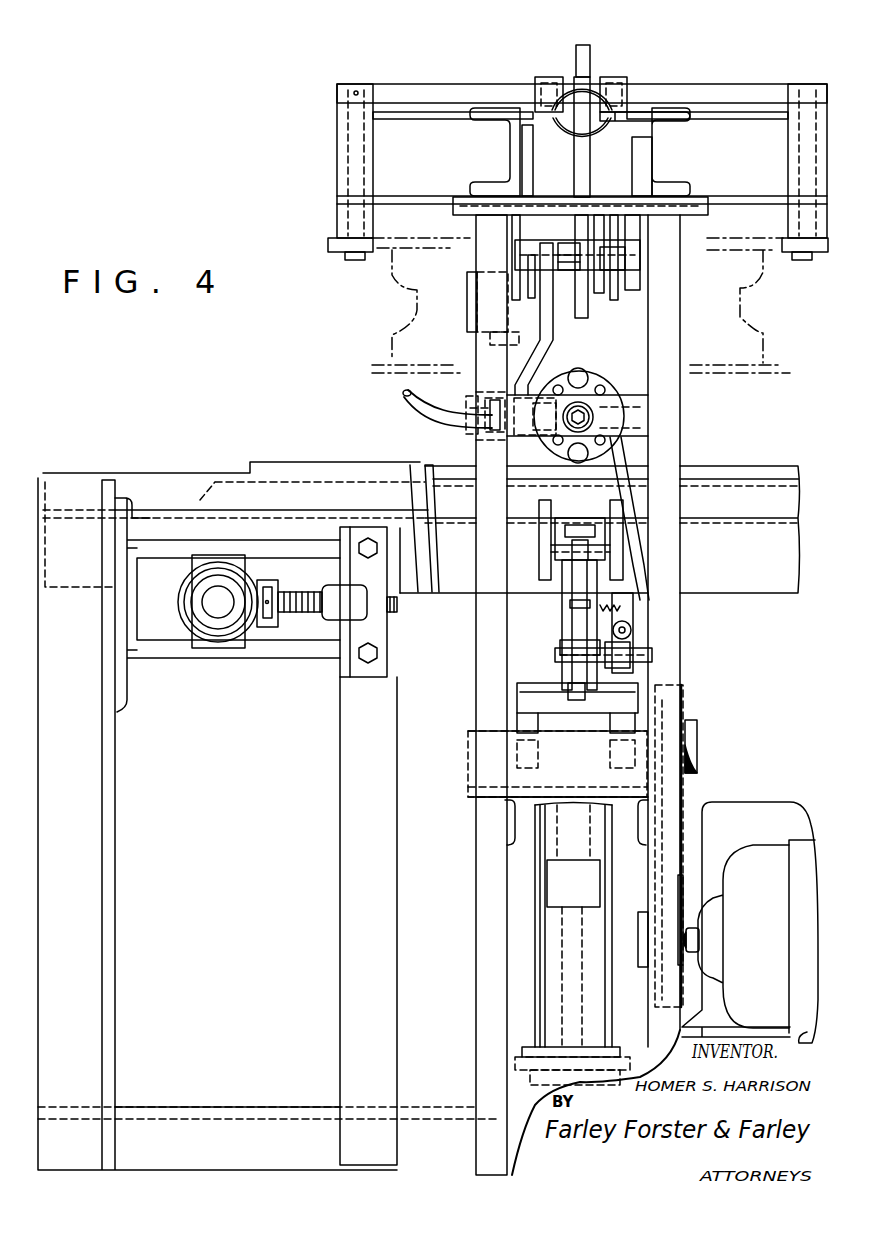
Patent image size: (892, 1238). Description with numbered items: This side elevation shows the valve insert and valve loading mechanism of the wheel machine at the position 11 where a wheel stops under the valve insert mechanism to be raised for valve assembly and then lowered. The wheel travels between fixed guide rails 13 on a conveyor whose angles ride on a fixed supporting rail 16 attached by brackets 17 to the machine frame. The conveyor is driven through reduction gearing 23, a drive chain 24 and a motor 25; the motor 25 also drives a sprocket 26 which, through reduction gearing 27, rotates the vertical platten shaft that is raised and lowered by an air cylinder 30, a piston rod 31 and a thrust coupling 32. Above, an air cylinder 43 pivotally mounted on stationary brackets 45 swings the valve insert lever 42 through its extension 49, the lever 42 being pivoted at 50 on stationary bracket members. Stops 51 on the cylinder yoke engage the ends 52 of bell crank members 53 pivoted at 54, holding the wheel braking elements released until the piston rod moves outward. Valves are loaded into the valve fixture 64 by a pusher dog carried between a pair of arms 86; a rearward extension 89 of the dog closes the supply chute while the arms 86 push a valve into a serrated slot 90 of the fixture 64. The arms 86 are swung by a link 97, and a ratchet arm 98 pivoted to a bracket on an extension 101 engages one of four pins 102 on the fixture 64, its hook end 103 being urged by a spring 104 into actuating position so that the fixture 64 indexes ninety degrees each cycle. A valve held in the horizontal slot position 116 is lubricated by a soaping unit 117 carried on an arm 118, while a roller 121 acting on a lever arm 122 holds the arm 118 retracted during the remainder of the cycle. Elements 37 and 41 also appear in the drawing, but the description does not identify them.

The position under the valve insert mechanism 11 is at (752, 330).
The fixed guide rails 13 is at (378, 425).
The fixed supporting rail 16 is at (447, 487).
The brackets 17 is at (724, 570).
The reduction gearing 23 is at (797, 812).
The drive chain 24 is at (668, 840).
The motor 25 is at (770, 850).
The sprocket 26 is at (685, 710).
The reduction gearing 27 is at (588, 725).
The air cylinder 30 is at (548, 1086).
The piston rod 31 is at (570, 965).
The thrust coupling 32 is at (570, 868).
The channel members 37 is at (512, 152).
The shaft bearing hanger 41 is at (573, 107).
The valve insert lever 42 is at (582, 300).
The air cylinder 43 is at (600, 76).
The stationary brackets 45 is at (640, 113).
The extension of the valve insert lever 49 is at (581, 177).
The pivotal axis of the insert lever 50 is at (565, 255).
The stops 51 is at (538, 83).
The ends of bell crank members 52 is at (460, 92).
The bell crank members 53 is at (337, 254).
The bell crank pivot 54 is at (352, 140).
The valve fixture 64 is at (576, 376).
The arms 86 is at (545, 536).
The rearward extension of the pusher dog 89 is at (570, 550).
The serrated slot 90 is at (553, 457).
The link 97 is at (563, 615).
The ratchet arm 98 is at (622, 488).
The extension at the lever end 101 is at (605, 660).
The pins 102 is at (553, 393).
The hook end 103 is at (606, 416).
The spring 104 is at (615, 611).
The horizontal slot position 116 is at (548, 392).
The soaping unit 117 is at (509, 446).
The arm 118 is at (547, 338).
The roller 121 is at (581, 305).
The lever arm 122 is at (597, 290).